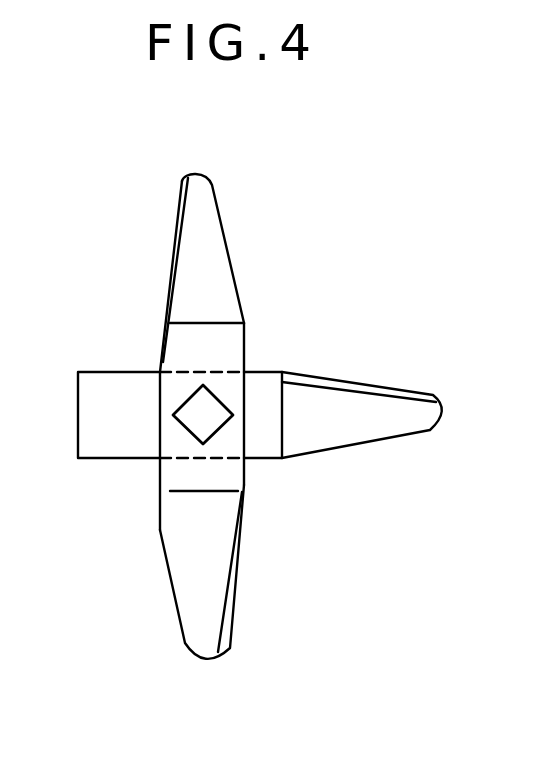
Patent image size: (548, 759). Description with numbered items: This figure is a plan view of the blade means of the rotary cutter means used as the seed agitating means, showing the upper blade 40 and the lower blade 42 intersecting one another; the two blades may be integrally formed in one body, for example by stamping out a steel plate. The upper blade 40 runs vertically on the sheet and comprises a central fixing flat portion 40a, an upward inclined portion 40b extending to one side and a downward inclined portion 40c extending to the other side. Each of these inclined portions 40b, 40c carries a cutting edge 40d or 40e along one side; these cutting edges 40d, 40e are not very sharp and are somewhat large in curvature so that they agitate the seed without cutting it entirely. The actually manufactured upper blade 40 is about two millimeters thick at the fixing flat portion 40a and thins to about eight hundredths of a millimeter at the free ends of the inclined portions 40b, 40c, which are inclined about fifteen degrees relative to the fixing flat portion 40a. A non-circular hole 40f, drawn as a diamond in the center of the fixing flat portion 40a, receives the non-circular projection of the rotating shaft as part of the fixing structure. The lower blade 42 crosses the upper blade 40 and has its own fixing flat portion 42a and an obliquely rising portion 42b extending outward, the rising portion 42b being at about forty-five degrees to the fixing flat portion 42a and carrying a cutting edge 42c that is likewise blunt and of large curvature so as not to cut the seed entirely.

The upper blade 40 is at (198, 416).
The fixing flat portion 40a is at (237, 352).
The upward inclined portion 40b is at (207, 232).
The downward inclined portion 40c is at (183, 577).
The cutting edge 40d is at (177, 228).
The cutting edge 40e is at (233, 613).
The non-circular hole 40f is at (217, 433).
The lower blade 42 is at (272, 409).
The fixing flat portion 42a is at (150, 445).
The obliquely rising portion 42b is at (383, 413).
The cutting edge 42c is at (350, 380).